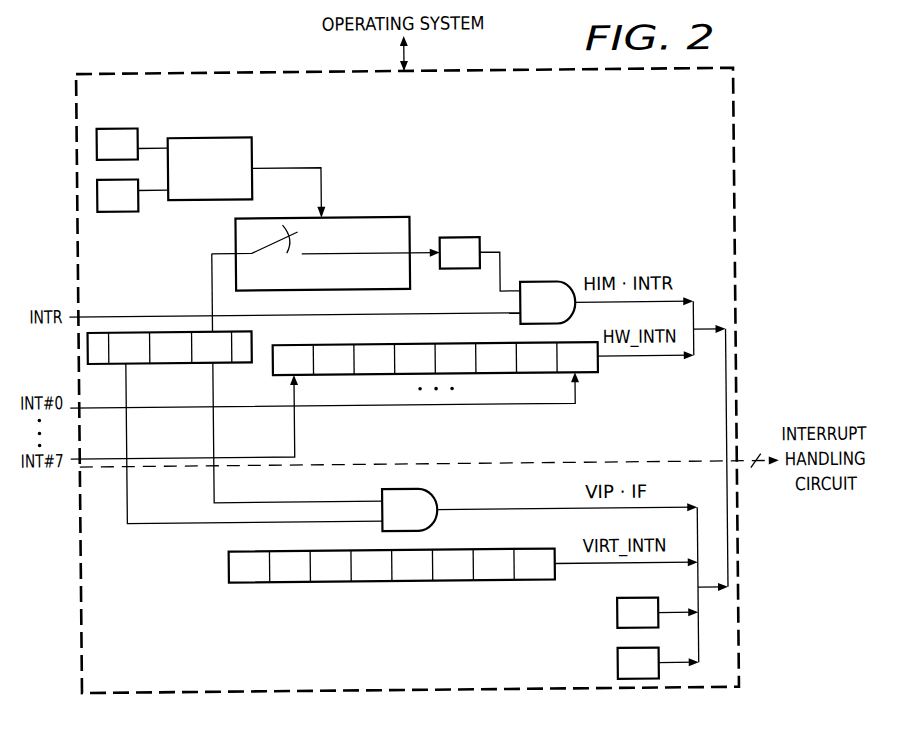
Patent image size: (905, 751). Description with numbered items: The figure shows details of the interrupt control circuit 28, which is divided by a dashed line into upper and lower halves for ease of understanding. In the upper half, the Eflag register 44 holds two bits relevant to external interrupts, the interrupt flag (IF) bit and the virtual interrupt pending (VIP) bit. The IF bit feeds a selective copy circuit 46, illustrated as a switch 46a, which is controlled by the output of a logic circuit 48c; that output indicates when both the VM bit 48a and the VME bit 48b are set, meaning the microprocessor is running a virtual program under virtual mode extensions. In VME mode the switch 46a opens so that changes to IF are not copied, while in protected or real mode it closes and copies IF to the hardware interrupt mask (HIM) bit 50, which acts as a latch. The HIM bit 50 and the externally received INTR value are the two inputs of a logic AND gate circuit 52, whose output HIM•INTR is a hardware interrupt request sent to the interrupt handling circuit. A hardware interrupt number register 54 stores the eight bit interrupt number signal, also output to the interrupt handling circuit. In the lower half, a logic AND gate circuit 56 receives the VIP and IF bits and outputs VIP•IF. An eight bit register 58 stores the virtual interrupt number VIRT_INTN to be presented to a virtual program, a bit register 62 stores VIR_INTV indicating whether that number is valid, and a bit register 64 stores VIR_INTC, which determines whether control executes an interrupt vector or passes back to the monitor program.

The interrupt control circuit 28 is at (716, 107).
The Eflag register 44 is at (177, 362).
The selective copy circuit 46 is at (385, 216).
The switch 46a is at (284, 242).
The VM bit 48a is at (119, 126).
The VME bit 48b is at (120, 209).
The logic circuit 48c is at (210, 136).
The hardware interrupt mask (HIM) bit 50 is at (462, 238).
The logic AND gate circuit 52 is at (554, 283).
The hardware interrupt number register 54 is at (598, 375).
The logic AND gate circuit 56 is at (431, 496).
The eight bit register 58 is at (398, 582).
The bit register 62 is at (614, 600).
The bit register 64 is at (614, 650).